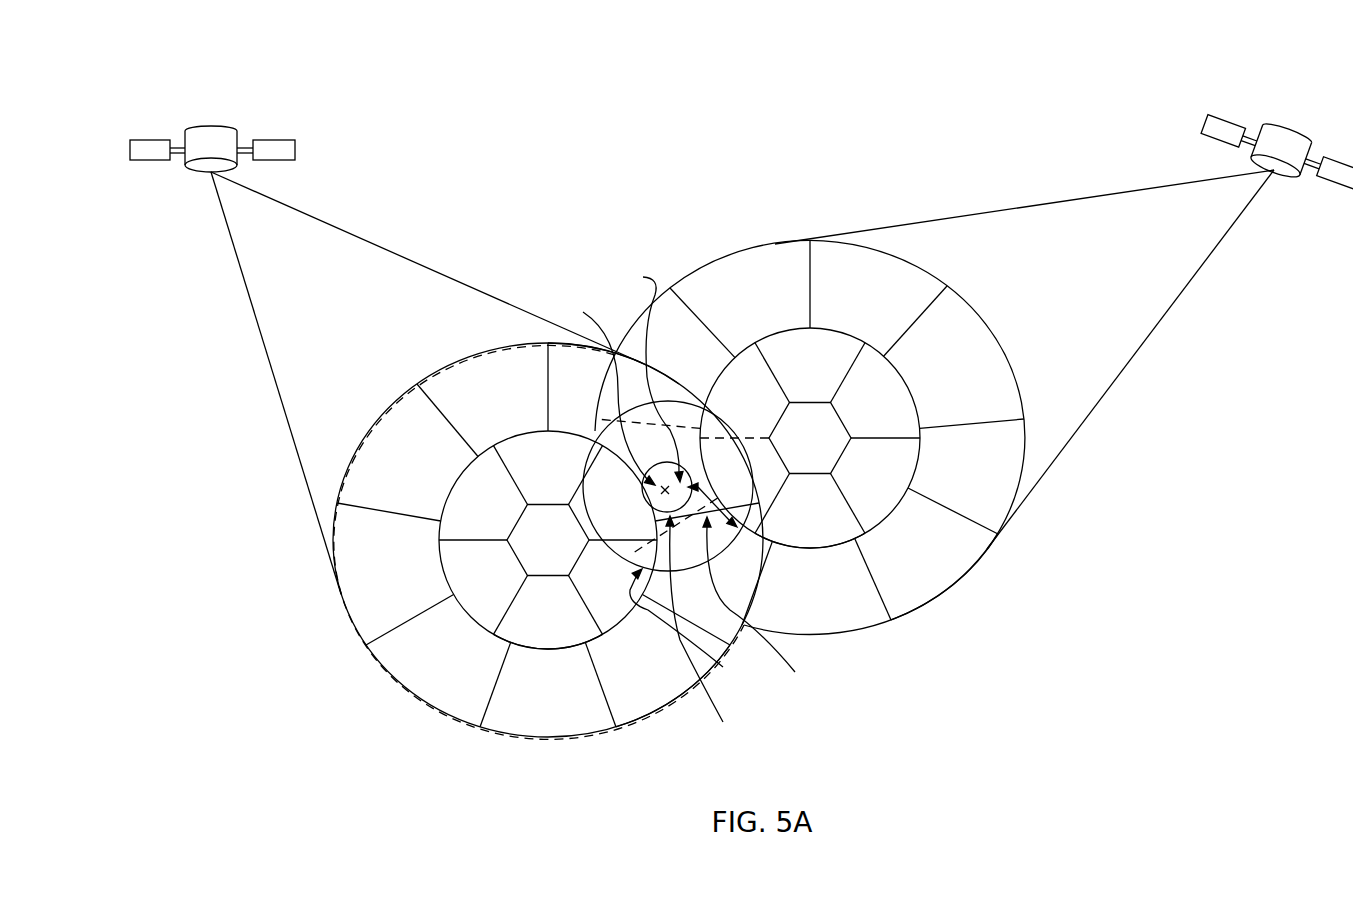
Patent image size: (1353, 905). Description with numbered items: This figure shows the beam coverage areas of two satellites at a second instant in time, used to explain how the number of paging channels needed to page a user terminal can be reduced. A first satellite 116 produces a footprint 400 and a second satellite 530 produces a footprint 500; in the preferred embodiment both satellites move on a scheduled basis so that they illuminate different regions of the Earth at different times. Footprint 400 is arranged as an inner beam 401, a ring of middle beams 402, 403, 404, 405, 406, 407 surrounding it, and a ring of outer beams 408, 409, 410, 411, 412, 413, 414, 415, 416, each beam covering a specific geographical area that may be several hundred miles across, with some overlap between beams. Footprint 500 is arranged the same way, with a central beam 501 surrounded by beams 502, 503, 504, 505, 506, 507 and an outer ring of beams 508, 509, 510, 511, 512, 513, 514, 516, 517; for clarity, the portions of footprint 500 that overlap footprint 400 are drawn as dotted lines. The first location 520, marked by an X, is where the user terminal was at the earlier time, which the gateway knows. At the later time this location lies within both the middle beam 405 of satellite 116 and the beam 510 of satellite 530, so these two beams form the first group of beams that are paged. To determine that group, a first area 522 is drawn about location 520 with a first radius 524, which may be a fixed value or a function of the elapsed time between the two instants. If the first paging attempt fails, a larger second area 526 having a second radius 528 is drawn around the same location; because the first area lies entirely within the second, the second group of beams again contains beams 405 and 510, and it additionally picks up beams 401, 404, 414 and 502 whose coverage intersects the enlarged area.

The satellite 116 is at (226, 128).
The satellite 530 is at (1284, 124).
The satellite footprint 400 is at (384, 681).
The inner beam 401 is at (548, 540).
The middle beam 402 is at (483, 587).
The middle beam 403 is at (497, 480).
The middle beam 404 is at (567, 475).
The middle beam 405 is at (623, 524).
The middle beam 406 is at (599, 600).
The middle beam 407 is at (548, 629).
The outer beam 408 is at (548, 684).
The outer beam 409 is at (418, 635).
The outer beam 410 is at (389, 544).
The outer beam 411 is at (429, 432).
The outer beam 412 is at (510, 387).
The outer beam 413 is at (613, 368).
The outer beam 414 is at (707, 485).
The outer beam 415 is at (686, 615).
The outer beam 416 is at (673, 686).
The satellite footprint 500 is at (972, 582).
The beam 501 is at (810, 438).
The beam 502 is at (745, 485).
The beam 503 is at (759, 378).
The beam 504 is at (830, 373).
The beam 505 is at (885, 416).
The beam 506 is at (863, 497).
The beam 507 is at (810, 527).
The beam 508 is at (816, 582).
The beam 509 is at (685, 534).
The beam 510 is at (648, 434).
The beam 511 is at (695, 323).
The beam 512 is at (772, 284).
The beam 513 is at (901, 321).
The beam 514 is at (972, 395).
The beam 516 is at (953, 495).
The outer ring beam cell 517 is at (944, 577).
The first location 520 is at (608, 386).
The first area 522 is at (645, 374).
The first radius 524 is at (693, 628).
The second area 526 is at (747, 590).
The second radius 528 is at (705, 634).